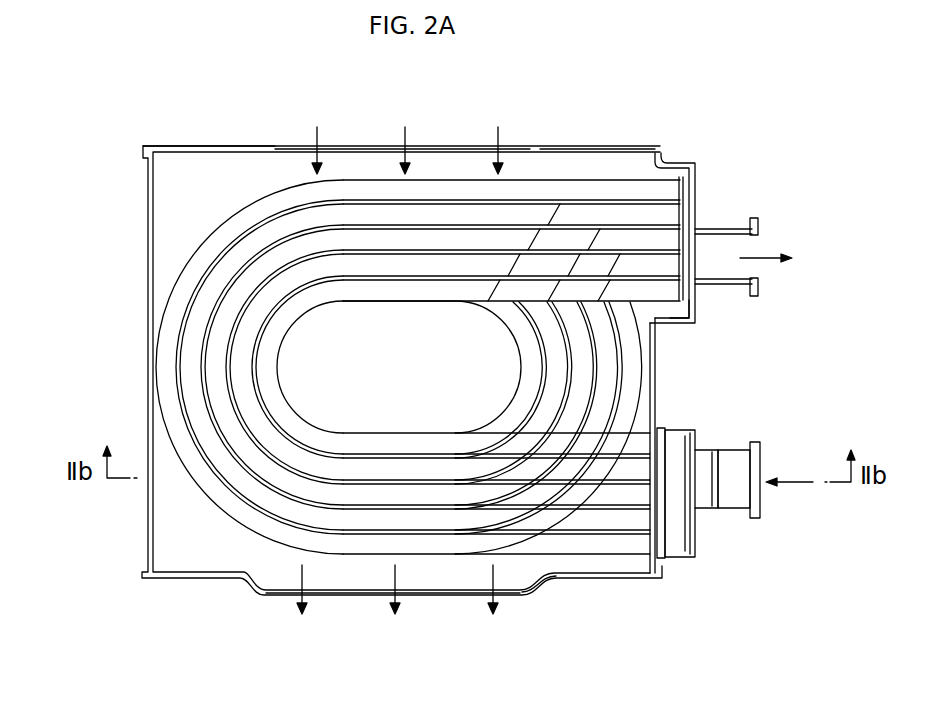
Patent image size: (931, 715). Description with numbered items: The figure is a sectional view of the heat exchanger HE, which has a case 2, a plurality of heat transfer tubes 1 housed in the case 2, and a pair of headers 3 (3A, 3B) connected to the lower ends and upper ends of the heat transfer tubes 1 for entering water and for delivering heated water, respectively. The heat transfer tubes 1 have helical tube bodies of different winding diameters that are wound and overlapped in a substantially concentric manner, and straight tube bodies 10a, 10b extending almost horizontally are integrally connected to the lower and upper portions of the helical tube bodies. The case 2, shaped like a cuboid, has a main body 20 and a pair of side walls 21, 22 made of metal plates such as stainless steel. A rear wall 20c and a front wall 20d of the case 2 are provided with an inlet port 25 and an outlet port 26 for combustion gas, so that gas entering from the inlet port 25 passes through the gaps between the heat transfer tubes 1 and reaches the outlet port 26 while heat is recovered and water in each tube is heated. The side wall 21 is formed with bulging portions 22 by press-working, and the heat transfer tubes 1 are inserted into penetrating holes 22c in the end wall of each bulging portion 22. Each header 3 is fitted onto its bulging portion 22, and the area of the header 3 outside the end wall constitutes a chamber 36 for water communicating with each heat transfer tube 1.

The heat exchanger HE is at (458, 352).
The main body 20 is at (428, 352).
The case 2 is at (258, 142).
The heat transfer tubes 1 is at (418, 360).
The inlet port 25 is at (428, 147).
The rear wall 20c is at (577, 147).
The straight tube bodies 10b is at (630, 214).
The bulging portion 22 is at (437, 367).
The headers 3 is at (739, 354).
The header 3B is at (745, 224).
The header 3A is at (708, 425).
The chamber 36 is at (698, 200).
The penetrating holes 22c is at (680, 298).
The side wall 21 is at (657, 363).
The straight tube bodies 10a is at (613, 546).
The front wall 20d is at (573, 580).
The outlet port 26 is at (415, 595).